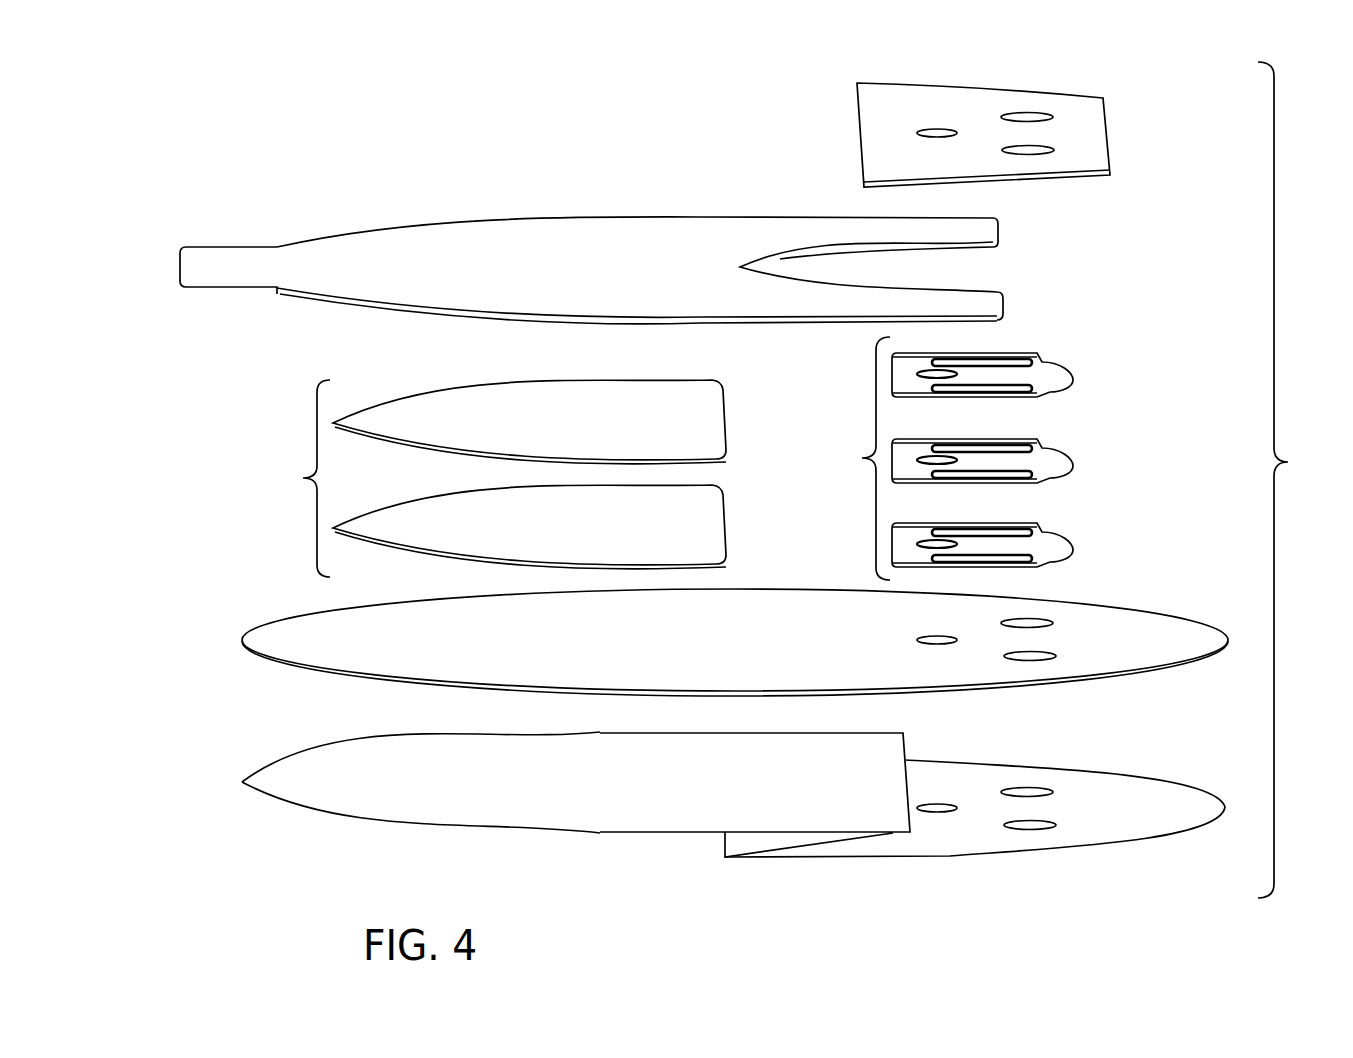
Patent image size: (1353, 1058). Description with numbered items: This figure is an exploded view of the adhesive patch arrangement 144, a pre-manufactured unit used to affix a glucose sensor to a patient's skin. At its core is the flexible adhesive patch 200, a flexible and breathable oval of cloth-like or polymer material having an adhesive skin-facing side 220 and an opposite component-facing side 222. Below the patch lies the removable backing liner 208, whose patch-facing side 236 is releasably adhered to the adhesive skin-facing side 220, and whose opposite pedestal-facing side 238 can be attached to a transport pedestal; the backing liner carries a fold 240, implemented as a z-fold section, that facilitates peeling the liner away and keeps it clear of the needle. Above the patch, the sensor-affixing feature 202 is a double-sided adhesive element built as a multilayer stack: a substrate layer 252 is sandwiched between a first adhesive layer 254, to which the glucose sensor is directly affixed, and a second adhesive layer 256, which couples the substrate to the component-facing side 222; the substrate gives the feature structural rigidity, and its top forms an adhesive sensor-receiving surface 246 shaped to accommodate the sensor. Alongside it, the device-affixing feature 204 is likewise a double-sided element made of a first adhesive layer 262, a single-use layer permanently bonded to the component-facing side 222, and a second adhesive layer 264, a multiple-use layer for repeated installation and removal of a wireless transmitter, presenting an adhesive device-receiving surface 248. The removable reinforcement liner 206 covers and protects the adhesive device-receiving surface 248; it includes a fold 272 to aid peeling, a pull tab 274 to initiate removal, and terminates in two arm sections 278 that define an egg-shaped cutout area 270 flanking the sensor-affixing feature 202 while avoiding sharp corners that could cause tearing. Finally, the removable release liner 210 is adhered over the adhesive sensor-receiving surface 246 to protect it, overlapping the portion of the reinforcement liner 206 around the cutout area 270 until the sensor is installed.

The adhesive patch arrangement 144 is at (1297, 480).
The flexible adhesive patch 200 is at (694, 660).
The sensor-affixing feature 202 is at (981, 447).
The device-affixing feature 204 is at (523, 460).
The removable reinforcement liner 206 is at (611, 259).
The removable backing liner 208 is at (692, 809).
The removable release liner 210 is at (896, 98).
The adhesive skin-facing side 220 is at (832, 695).
The component-facing side 222 is at (670, 668).
The patch-facing side 236 is at (425, 763).
The pedestal-facing side 238 is at (642, 835).
The fold 240 is at (793, 853).
The adhesive sensor-receiving surface 246 is at (1048, 373).
The adhesive device-receiving surface 248 is at (460, 412).
The substrate layer 252 is at (1077, 462).
The first adhesive layer 254 is at (1077, 377).
The second adhesive layer 256 is at (1077, 547).
The first adhesive layer 262 is at (727, 533).
The second adhesive layer 264 is at (727, 403).
The cutout area 270 is at (942, 281).
The fold 272 is at (996, 230).
The pull tab 274 is at (184, 247).
The arm sections 278 is at (930, 226).